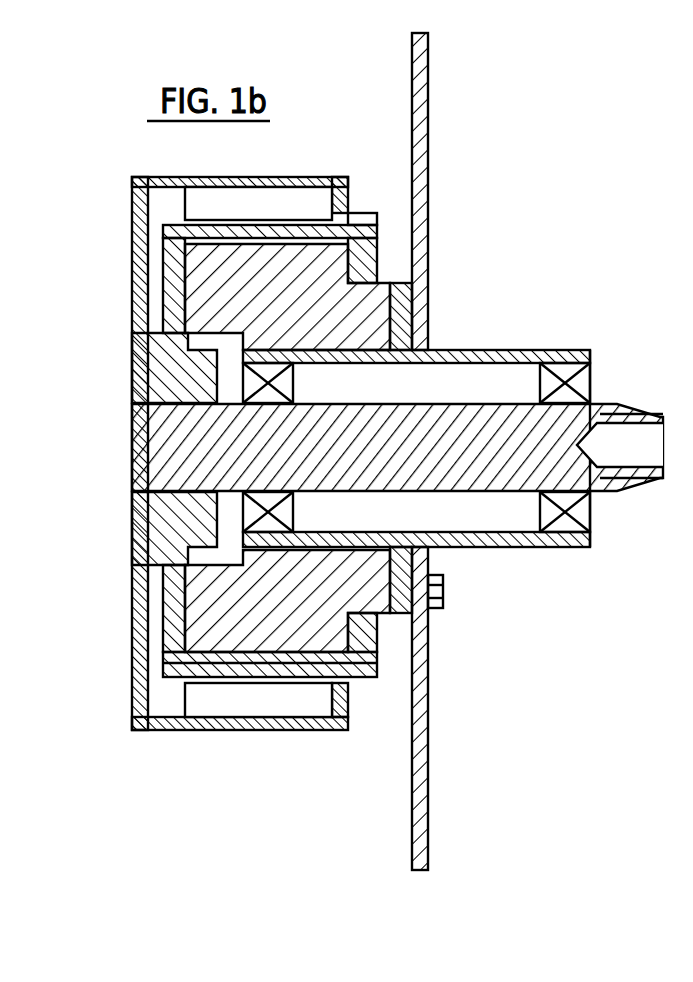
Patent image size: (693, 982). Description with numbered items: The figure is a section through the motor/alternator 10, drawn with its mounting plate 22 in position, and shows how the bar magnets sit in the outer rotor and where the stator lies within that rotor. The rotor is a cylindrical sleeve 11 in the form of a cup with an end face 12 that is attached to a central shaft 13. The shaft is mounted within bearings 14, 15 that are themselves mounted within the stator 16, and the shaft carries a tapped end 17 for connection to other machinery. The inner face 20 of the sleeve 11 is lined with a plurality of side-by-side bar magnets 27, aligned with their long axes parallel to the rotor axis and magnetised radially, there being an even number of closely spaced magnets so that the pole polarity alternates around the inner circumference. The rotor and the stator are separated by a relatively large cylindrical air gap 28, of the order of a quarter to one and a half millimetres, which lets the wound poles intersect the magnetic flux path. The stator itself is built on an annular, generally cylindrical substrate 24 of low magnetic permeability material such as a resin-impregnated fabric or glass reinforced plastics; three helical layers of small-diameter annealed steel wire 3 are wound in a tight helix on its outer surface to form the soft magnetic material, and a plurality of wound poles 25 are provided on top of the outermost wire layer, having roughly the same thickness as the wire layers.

The motor/alternator 10 is at (116, 247).
The cylindrical sleeve 11 is at (190, 178).
The end face 12 is at (150, 353).
The central shaft 13 is at (175, 463).
The bearing 14 is at (203, 397).
The bearing 15 is at (540, 380).
The stator 16 is at (116, 311).
The tapped end 17 is at (606, 476).
The inner face 20 is at (348, 208).
The mounting plate 22 is at (420, 165).
The cylindrical substrate 24 is at (217, 603).
The wound poles 25 is at (220, 662).
The bar magnets 27 is at (222, 187).
The cylindrical air gap 28 is at (358, 217).
The helical windings of steel wire 3 is at (373, 263).